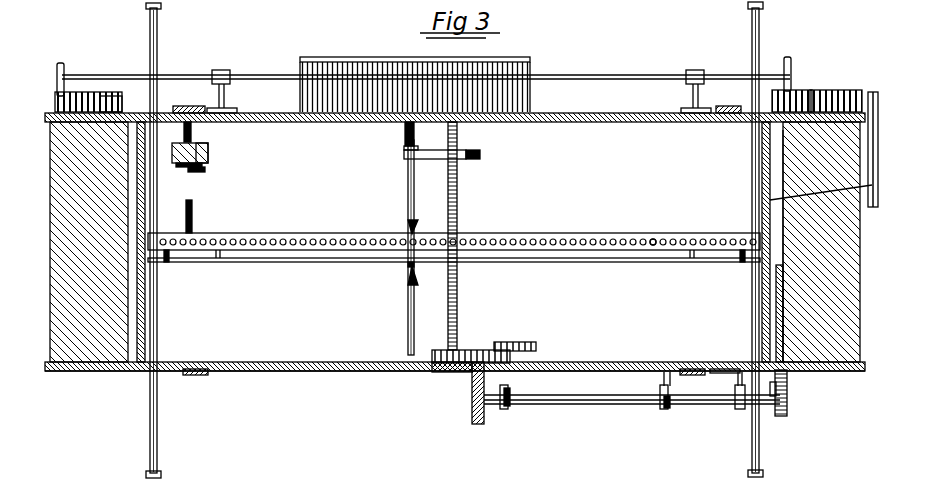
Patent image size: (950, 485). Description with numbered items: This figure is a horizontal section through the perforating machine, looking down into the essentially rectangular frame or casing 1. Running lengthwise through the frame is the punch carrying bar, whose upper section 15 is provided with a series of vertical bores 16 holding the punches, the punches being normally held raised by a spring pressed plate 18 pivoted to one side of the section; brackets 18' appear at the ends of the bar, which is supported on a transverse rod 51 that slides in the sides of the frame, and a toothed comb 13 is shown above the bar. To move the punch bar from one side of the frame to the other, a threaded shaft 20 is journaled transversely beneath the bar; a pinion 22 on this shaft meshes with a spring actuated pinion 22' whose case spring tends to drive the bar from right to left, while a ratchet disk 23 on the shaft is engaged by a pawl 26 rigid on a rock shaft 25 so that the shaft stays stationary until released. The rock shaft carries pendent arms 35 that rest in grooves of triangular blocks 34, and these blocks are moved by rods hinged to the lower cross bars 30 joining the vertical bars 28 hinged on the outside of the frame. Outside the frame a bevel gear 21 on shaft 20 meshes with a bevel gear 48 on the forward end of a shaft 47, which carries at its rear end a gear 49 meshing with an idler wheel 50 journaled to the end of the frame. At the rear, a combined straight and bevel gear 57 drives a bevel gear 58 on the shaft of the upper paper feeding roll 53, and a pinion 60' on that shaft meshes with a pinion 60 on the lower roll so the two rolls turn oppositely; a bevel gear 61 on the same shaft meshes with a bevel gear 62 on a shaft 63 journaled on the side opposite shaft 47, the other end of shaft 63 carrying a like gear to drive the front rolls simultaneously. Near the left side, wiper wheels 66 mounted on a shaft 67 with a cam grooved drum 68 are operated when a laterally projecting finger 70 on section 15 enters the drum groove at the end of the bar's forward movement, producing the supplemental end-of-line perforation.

The frame or casing 1 is at (336, 354).
The comb 13 is at (352, 60).
The upper section of punch carrying bar 15 is at (587, 233).
The vertical bores 16 is at (654, 238).
The spring pressed plate 18 is at (454, 269).
The bracket 18' is at (459, 270).
The threaded shaft 20 is at (458, 290).
The bevel gear 21 is at (446, 372).
The pinion 22 is at (471, 341).
The spring actuated pinion 22' is at (541, 334).
The ratchet disk 23 is at (482, 154).
The rock shaft 25 is at (408, 196).
The pawl 26 is at (416, 160).
The vertical bars 28 is at (210, 108).
The lower cross bars 30 is at (374, 371).
The triangular shaped blocks 34 is at (418, 222).
The pendent arms 35 is at (406, 268).
The shaft 47 is at (596, 404).
The bevel gear 48 is at (472, 418).
The gear 49 is at (788, 404).
The idler wheel 50 is at (776, 327).
The transverse rod 51 is at (158, 46).
The upper paper feeding roll 53 is at (800, 171).
The combined straight and bevel gear 57 is at (768, 200).
The bevel gear 58 is at (868, 95).
The pinion 60 is at (98, 81).
The pinion 60' is at (481, 87).
The bevel gear 61 is at (800, 90).
The bevel gear 62 is at (65, 68).
The shaft 63 is at (558, 75).
The wiper wheels 66 is at (198, 172).
The shaft 67 is at (192, 133).
The cam grooved drum 68 is at (210, 152).
The laterally projecting finger 70 is at (200, 216).